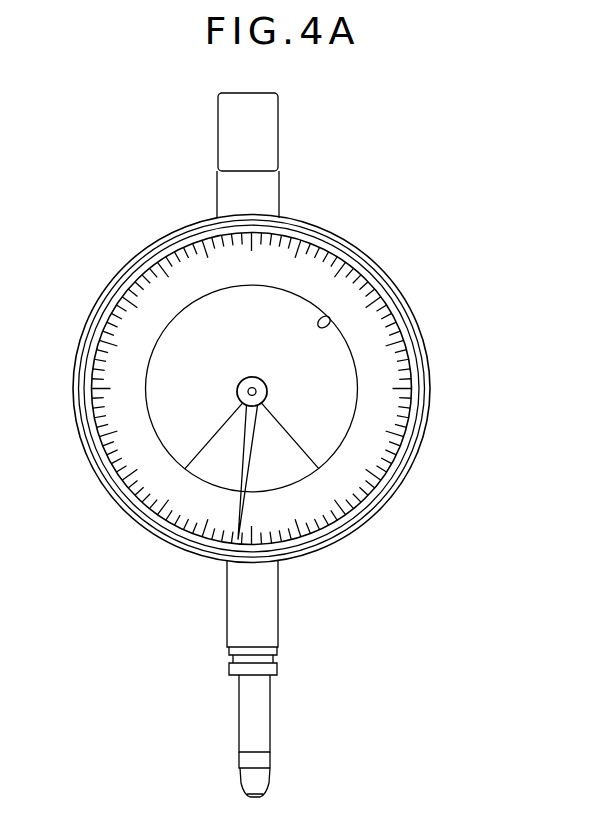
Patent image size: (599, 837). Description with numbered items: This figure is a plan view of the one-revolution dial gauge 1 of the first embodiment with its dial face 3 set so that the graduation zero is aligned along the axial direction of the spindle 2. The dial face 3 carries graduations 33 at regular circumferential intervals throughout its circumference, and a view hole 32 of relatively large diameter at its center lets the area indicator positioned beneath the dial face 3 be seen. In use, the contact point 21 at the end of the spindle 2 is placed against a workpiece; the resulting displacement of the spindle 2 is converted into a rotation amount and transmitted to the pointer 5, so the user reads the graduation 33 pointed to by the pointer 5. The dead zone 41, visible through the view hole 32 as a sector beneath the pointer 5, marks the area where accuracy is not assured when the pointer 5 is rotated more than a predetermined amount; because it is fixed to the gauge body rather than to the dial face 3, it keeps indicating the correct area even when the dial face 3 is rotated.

The one-revolution dial gauge 1 is at (497, 197).
The spindle 2 is at (250, 722).
The contact point 21 is at (262, 768).
The dial face 3 is at (120, 412).
The view hole 32 is at (330, 332).
The graduations 33 is at (263, 234).
The dead zone 41 is at (213, 467).
The pointer 5 is at (247, 458).